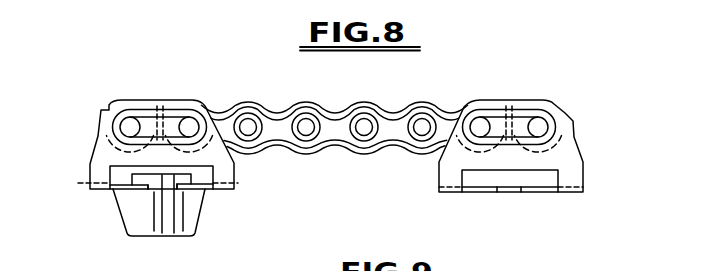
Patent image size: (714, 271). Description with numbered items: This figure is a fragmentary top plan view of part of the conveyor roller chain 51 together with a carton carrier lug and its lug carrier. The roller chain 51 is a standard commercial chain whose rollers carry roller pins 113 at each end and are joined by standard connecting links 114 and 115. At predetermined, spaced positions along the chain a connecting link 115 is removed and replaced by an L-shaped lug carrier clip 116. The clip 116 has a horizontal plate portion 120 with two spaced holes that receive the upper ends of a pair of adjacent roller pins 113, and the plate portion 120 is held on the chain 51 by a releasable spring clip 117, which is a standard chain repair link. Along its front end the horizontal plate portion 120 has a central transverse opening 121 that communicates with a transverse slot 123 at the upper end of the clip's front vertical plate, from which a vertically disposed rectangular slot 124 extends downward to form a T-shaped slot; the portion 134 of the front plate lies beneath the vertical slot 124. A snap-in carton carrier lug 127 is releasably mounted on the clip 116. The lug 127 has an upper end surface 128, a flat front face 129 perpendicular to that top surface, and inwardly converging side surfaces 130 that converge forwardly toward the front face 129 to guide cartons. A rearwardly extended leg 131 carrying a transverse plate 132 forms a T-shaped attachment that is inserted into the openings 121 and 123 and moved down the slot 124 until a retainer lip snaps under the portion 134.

The conveyor roller chain 51 is at (451, 100).
The roller pins 113 is at (128, 126).
The roller chain connecting link 114 is at (107, 110).
The roller chain connecting link 115 is at (274, 122).
The L-shaped lug carrier clip 116 is at (160, 102).
The releasable spring clip 117 is at (143, 113).
The horizontal plate portion 120 is at (233, 164).
The central transverse opening 121 is at (553, 188).
The transverse slot 123 is at (477, 208).
The vertical rectangular slot 124 is at (527, 192).
The snap-in carton carrier lug 127 is at (180, 237).
The upper end surface 128 is at (192, 233).
The flat front face 129 is at (147, 233).
The inwardly converging longitudinal side surfaces 130 is at (127, 222).
The leg 131 is at (157, 187).
The transverse plate 132 is at (110, 175).
The front plate portion beneath vertical slot 134 is at (507, 195).